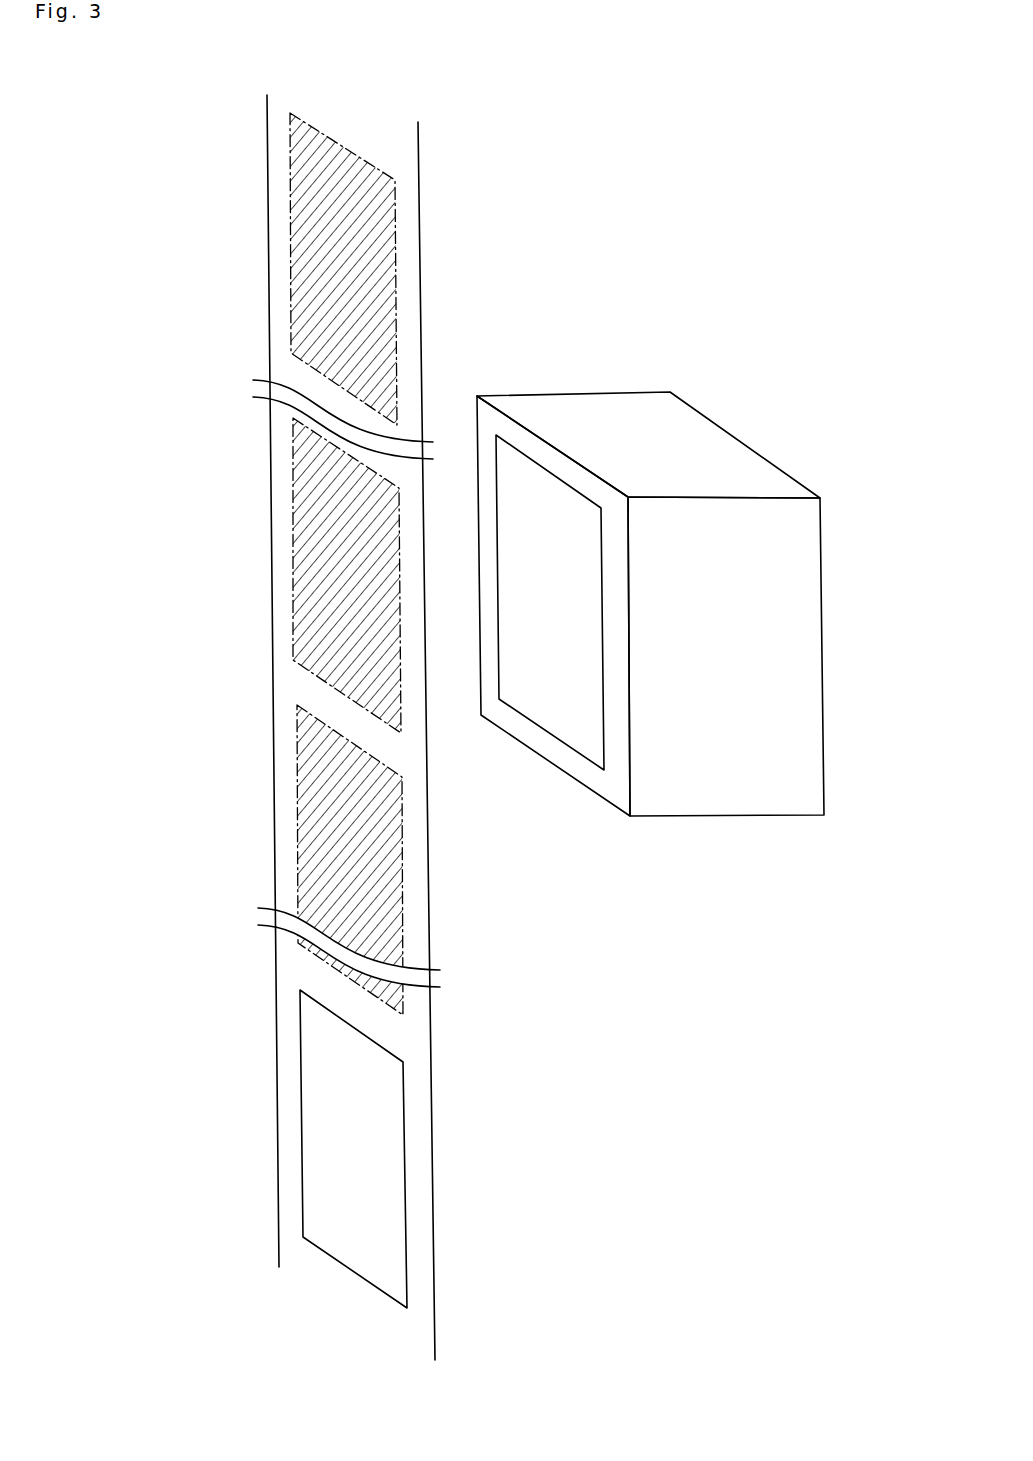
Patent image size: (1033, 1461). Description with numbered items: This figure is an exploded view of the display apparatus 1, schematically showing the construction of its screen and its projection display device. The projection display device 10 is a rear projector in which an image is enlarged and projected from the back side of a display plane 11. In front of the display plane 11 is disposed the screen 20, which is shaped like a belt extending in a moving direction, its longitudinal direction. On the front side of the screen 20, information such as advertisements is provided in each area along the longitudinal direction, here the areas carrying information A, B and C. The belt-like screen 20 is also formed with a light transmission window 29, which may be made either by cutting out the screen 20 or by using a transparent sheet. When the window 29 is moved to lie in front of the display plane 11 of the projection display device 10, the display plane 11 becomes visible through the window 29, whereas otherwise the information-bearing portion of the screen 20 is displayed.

The display apparatus 1 is at (778, 270).
The projection display device 10 is at (689, 610).
The display plane 11 is at (562, 712).
The screen 20 is at (268, 492).
The light transmission window 29 is at (405, 1117).